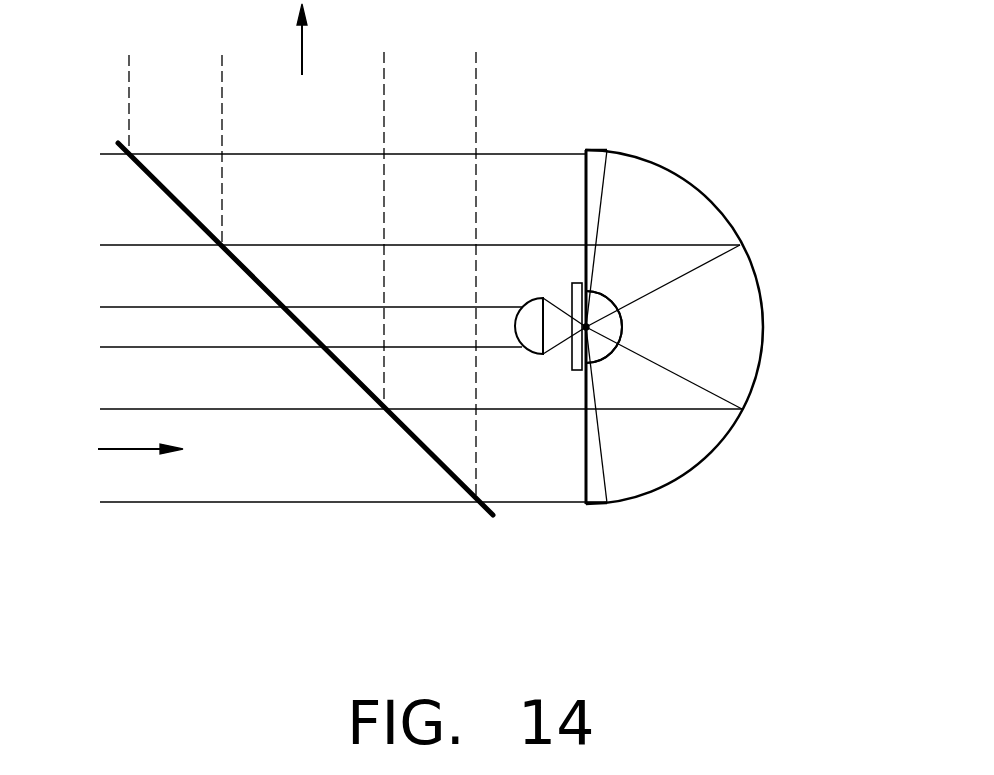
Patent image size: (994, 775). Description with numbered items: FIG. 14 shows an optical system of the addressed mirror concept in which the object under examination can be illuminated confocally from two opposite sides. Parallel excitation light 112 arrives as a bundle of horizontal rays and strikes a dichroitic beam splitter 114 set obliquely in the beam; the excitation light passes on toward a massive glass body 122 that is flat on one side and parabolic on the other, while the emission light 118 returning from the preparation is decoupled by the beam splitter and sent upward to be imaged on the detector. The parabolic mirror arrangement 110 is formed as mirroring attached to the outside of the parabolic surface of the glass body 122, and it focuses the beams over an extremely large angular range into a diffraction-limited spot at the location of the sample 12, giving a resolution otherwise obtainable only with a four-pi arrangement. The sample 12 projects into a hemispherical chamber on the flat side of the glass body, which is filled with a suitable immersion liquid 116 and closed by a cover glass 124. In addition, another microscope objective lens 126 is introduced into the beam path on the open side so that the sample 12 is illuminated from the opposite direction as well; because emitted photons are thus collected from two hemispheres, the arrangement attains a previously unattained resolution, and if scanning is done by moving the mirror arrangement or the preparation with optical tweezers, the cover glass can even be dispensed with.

The sample 12 is at (620, 328).
The parabolic mirror arrangement 110 is at (764, 341).
The parallel excitation light 112 is at (115, 450).
The dichroitic beam splitter 114 is at (487, 517).
The immersion liquid 116 is at (606, 310).
The emission light 118 is at (308, 60).
The massive glass body 122 is at (620, 183).
The cover glass 124 is at (572, 284).
The microscope objective lens 126 is at (525, 335).